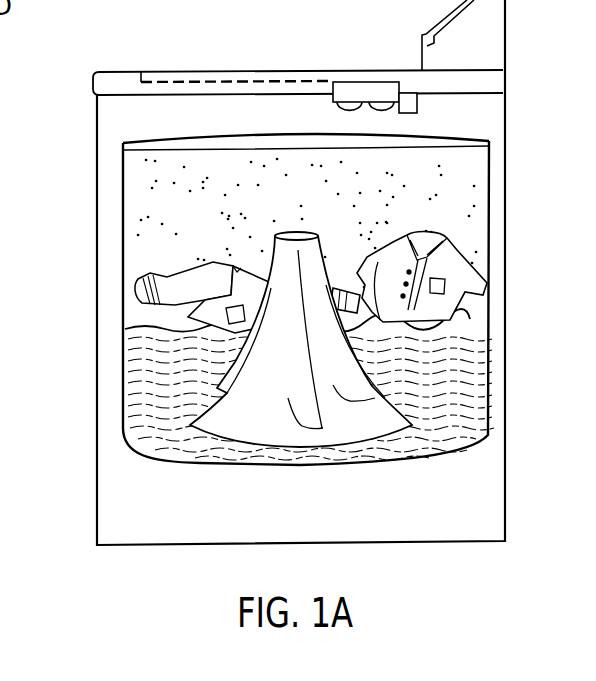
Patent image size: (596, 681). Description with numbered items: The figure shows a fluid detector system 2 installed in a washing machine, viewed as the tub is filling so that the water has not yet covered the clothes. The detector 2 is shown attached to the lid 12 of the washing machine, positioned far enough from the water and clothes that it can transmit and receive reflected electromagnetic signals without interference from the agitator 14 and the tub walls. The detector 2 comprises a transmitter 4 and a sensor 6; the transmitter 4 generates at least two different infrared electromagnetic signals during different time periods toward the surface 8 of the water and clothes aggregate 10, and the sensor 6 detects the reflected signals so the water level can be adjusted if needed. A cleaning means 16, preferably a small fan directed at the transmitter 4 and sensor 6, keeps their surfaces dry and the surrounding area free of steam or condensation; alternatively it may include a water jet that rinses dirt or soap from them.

The fluid detector system 2 is at (375, 66).
The transmitter 4 is at (348, 108).
The sensor 6 is at (388, 114).
The surface 8 is at (458, 313).
The water and clothes aggregate 10 is at (178, 368).
The lid 12 is at (188, 70).
The agitator 14 is at (372, 400).
The cleaning means 16 is at (409, 100).